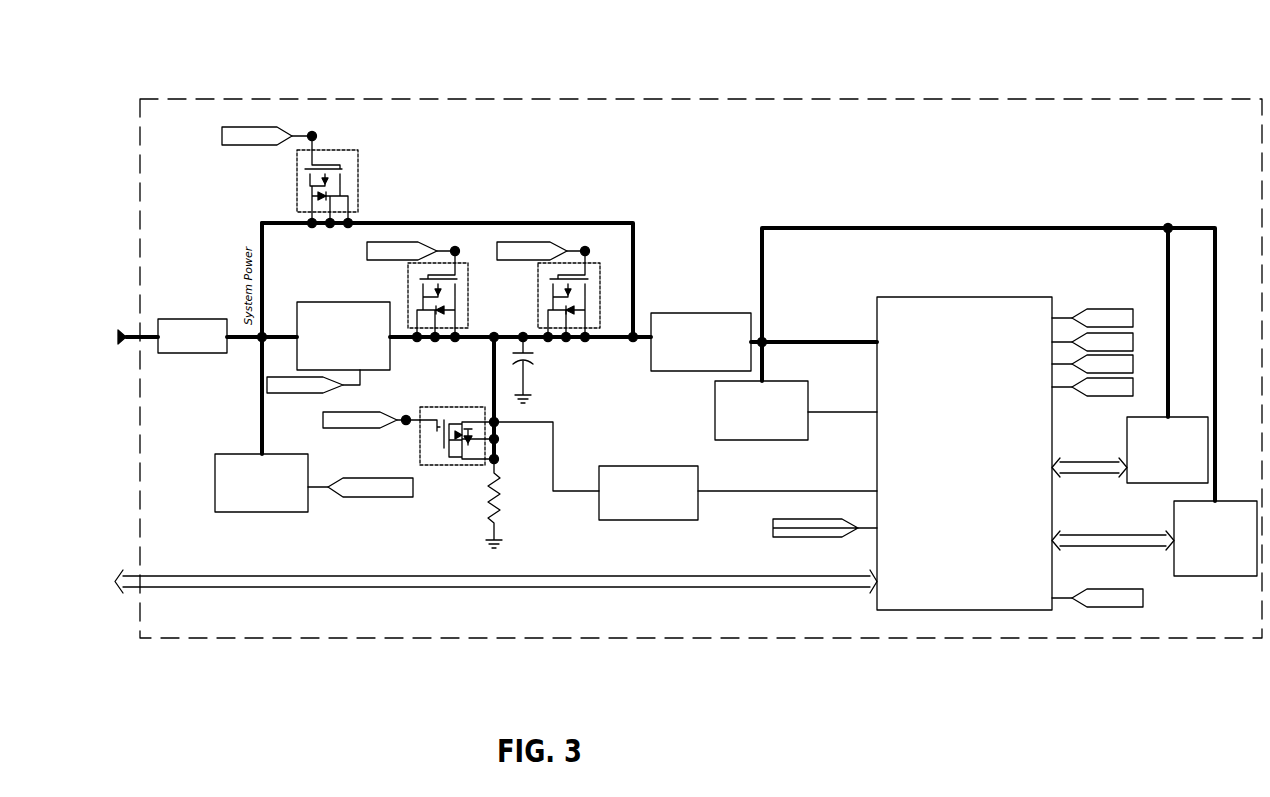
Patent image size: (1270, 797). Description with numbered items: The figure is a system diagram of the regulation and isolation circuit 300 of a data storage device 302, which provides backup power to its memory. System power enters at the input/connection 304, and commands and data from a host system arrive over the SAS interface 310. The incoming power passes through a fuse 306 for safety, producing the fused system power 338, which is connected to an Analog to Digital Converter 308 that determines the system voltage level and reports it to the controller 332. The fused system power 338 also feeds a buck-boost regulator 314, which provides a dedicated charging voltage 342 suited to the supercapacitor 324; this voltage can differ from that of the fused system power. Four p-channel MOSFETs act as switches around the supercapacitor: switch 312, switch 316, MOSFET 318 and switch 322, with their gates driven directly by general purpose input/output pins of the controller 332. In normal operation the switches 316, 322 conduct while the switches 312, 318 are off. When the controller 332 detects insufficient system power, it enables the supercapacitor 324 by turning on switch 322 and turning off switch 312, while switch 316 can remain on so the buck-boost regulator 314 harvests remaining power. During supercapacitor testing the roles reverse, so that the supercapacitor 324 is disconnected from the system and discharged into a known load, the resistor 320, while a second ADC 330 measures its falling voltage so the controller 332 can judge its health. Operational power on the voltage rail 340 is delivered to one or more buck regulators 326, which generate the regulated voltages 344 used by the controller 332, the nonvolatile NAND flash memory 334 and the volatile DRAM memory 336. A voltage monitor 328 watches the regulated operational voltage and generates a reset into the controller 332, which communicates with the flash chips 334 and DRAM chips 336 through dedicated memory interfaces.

The power system 300 is at (493, 28).
The data storage device 302 is at (700, 98).
The input/connection 304 is at (121, 330).
The fuse 306 is at (208, 318).
The Analog to Digital Converter 308 is at (238, 454).
The SAS interface 310 is at (196, 576).
The switch 312 is at (297, 178).
The buck-boost regulator 314 is at (330, 302).
The switch 316 is at (408, 286).
The MOSFET 318 is at (456, 407).
The resistor 320 is at (485, 497).
The switch 322 is at (538, 290).
The supercapacitor 324 is at (532, 362).
The buck regulators 326 is at (707, 313).
The voltage monitor 328 is at (715, 415).
The ADC 330 is at (648, 466).
The controller 332 is at (903, 297).
The nonvolatile memory 334 is at (1127, 433).
The volatile memory 336 is at (1174, 518).
The fused system power 338 is at (262, 223).
The voltage rail 340 is at (483, 223).
The voltage level 342 is at (511, 337).
The voltages 344 is at (762, 228).